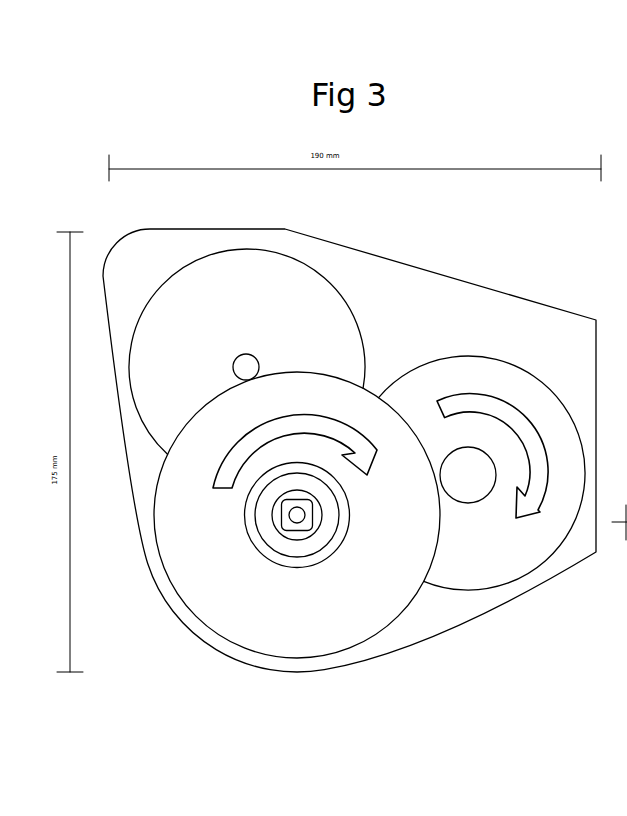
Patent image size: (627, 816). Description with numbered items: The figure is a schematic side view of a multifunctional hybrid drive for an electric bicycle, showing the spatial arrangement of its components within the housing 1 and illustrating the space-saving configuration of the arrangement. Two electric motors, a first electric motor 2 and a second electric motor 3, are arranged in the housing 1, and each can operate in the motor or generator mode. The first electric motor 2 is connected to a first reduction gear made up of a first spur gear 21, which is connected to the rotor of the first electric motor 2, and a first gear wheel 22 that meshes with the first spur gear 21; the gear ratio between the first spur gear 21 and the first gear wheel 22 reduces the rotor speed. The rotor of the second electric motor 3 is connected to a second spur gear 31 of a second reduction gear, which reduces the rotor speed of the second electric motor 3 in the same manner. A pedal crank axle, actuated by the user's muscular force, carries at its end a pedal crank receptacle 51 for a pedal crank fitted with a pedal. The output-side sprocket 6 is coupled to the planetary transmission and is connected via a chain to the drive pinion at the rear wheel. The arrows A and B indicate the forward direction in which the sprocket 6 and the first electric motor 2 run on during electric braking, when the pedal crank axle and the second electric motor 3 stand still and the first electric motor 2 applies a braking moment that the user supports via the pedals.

The housing 1 is at (472, 623).
The first electric motor 2 is at (533, 542).
The second electric motor 3 is at (209, 321).
The sprocket 6 is at (266, 553).
The first spur gear 21 is at (470, 474).
The first gear wheel 22 is at (280, 612).
The second spur gear 31 is at (246, 367).
The pedal crank receptacle 51 is at (298, 516).
The arrow A is at (225, 470).
The arrow B is at (511, 404).